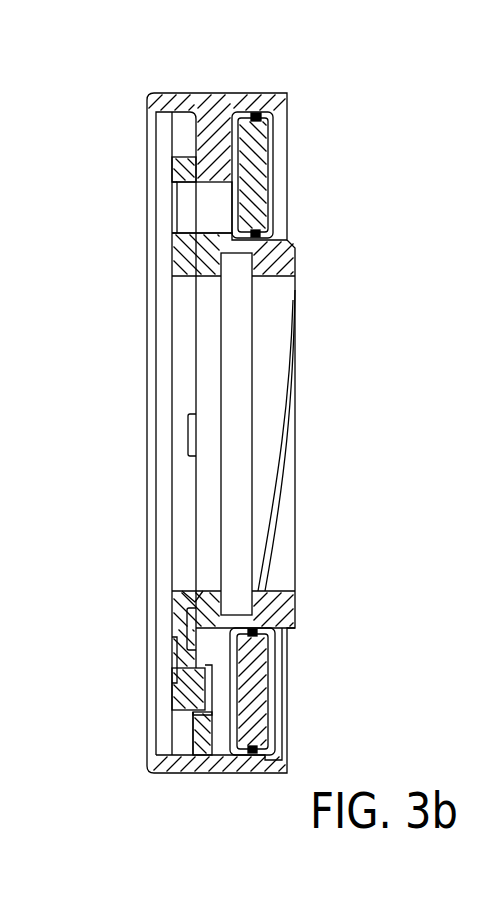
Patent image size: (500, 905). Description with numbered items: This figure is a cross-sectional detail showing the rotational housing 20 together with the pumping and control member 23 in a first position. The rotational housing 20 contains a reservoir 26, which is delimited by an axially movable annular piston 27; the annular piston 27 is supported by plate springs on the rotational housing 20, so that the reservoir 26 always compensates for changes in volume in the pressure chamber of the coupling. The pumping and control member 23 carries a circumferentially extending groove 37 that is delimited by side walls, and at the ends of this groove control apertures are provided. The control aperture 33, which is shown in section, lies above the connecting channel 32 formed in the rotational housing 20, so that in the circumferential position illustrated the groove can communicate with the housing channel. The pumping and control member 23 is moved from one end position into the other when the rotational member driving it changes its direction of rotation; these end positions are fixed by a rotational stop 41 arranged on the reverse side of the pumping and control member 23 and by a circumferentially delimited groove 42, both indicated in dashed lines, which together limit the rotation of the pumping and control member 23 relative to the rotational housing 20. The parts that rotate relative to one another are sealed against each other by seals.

The rotational housing 20 is at (200, 166).
The pumping and control member 23 is at (173, 160).
The reservoir 26 is at (253, 113).
The annular piston 27 is at (258, 170).
The connecting channel 32 is at (213, 198).
The control aperture 33 is at (187, 218).
The circumferentially extending groove 37 is at (173, 666).
The rotational stop 41 is at (198, 712).
The circumferentially delimited groove 42 is at (203, 690).